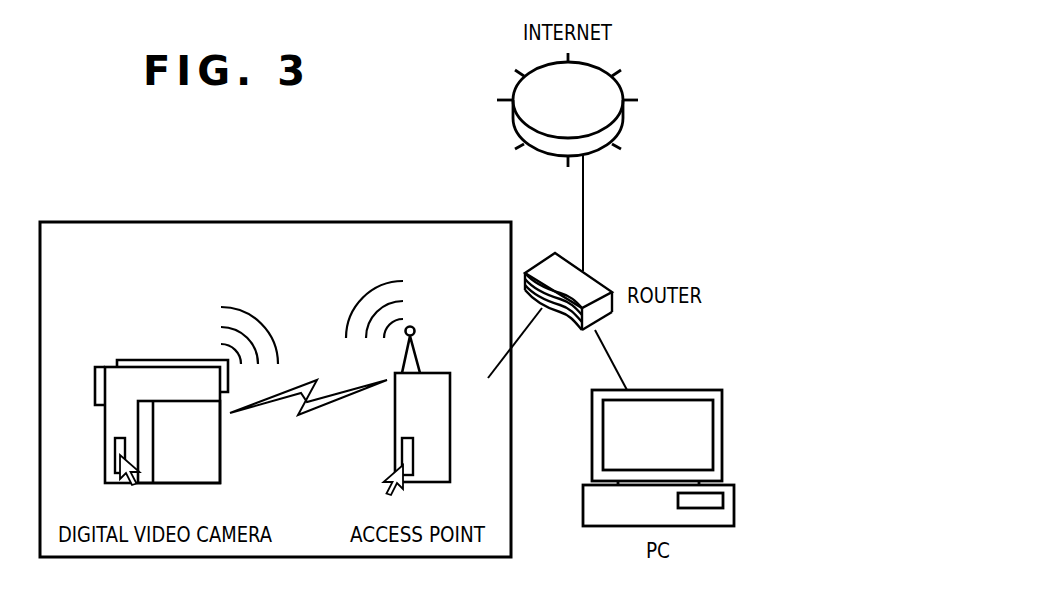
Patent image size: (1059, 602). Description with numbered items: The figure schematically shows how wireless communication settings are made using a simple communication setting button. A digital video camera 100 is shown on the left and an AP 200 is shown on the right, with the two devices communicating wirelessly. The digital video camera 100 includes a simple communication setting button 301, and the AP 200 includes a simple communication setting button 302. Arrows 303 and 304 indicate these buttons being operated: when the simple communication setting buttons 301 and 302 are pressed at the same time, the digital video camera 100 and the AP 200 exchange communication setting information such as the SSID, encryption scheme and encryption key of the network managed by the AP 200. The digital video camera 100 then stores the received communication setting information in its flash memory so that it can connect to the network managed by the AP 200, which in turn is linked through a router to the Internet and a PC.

The digital video camera 100 is at (136, 359).
The AP 200 is at (438, 373).
The simple communication setting button 301 is at (118, 437).
The simple communication setting button 302 is at (403, 440).
The arrow 303 is at (125, 482).
The arrow 304 is at (380, 473).